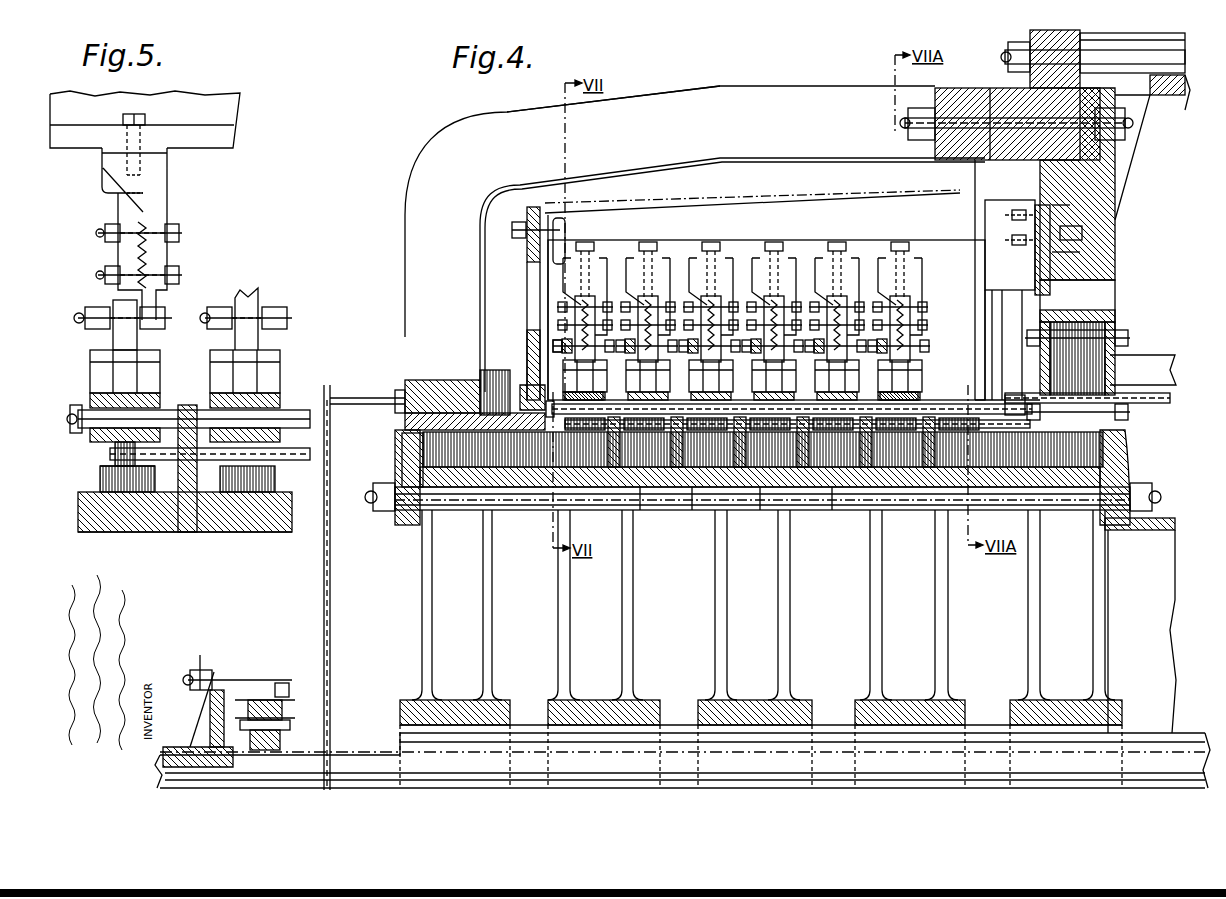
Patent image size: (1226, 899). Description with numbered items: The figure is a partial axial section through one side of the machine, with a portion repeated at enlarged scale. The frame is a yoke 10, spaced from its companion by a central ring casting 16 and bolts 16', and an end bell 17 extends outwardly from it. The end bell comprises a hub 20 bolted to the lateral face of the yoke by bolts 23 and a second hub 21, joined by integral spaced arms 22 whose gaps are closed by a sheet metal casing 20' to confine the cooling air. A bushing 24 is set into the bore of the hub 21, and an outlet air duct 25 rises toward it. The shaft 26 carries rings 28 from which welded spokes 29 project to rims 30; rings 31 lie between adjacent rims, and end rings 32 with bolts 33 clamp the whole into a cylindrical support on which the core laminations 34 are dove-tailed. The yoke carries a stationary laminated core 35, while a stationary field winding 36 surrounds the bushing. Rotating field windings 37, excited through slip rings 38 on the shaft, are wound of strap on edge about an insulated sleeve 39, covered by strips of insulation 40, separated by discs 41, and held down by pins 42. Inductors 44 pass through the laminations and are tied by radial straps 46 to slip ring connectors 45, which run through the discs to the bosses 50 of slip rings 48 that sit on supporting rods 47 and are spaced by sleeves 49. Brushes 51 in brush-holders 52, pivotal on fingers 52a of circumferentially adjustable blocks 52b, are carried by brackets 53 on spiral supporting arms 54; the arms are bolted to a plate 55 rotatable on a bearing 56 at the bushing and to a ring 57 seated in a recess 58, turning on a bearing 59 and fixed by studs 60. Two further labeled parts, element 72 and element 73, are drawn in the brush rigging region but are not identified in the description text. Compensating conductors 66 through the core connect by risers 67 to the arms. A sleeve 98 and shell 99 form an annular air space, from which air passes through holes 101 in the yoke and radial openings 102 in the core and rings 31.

In FIG. 4, the yoke 10 is at (1095, 172).
In FIG. 4, the central ring casting 16 is at (1152, 147).
In FIG. 4, the bolts 16' is at (1076, 52).
In FIG. 4, the end bell 17 is at (672, 93).
In FIG. 4, the hub 20 is at (1017, 111).
In FIG. 4, the sheet metal casing 20' is at (732, 275).
In FIG. 4, the hub 21 is at (395, 380).
In FIG. 4, the arms 22 is at (727, 104).
In FIG. 4, the bolts 23 is at (950, 108).
In FIG. 4, the bushing 24 is at (405, 423).
In FIG. 4, the outlet air ducts 25 is at (345, 600).
In FIG. 4, the shaft 26 is at (345, 760).
In FIG. 4, the rings 28 is at (645, 715).
In FIG. 4, the spokes 29 is at (715, 608).
In FIG. 4, the rims 30 is at (400, 475).
In FIG. 4, the rings 31 is at (525, 475).
In FIG. 4, the end rings 32 is at (400, 520).
In FIG. 4, the bolts 33 is at (832, 508).
In FIG. 5, the core laminations 34 is at (130, 518).
In FIG. 4, the core laminations 34 is at (692, 505).
In FIG. 4, the laminated core 35 is at (1080, 358).
In FIG. 4, the stationary field winding 36 is at (487, 380).
In FIG. 5, the rotating field windings 37 is at (100, 480).
In FIG. 4, the rotating field windings 37 is at (850, 440).
In FIG. 4, the slip rings 38 is at (258, 700).
In FIG. 5, the insulated sleeve 39 is at (95, 503).
In FIG. 5, the strips of insulation 40 is at (110, 466).
In FIG. 4, the strips of insulation 40 is at (763, 449).
In FIG. 5, the discs 41 is at (186, 525).
In FIG. 4, the discs 41 is at (760, 505).
In FIG. 4, the pins 42 is at (895, 392).
In FIG. 4, the inductors 44 is at (1135, 403).
In FIG. 5, the slip ring connectors 45 is at (295, 452).
In FIG. 4, the slip ring connectors 45 is at (932, 420).
In FIG. 4, the radial straps 46 is at (1005, 403).
In FIG. 5, the supporting rods 47 is at (72, 425).
In FIG. 4, the supporting rods 47 is at (748, 420).
In FIG. 5, the slip rings 48 is at (200, 380).
In FIG. 4, the slip rings 48 is at (810, 395).
In FIG. 5, the sleeves 49 is at (292, 415).
In FIG. 4, the sleeves 49 is at (668, 405).
In FIG. 5, the bosses 50 is at (115, 455).
In FIG. 5, the brushes 51 is at (105, 395).
In FIG. 4, the brushes 51 is at (592, 392).
In FIG. 5, the brush-holders 52 is at (145, 375).
In FIG. 4, the brush-holders 52 is at (600, 385).
In FIG. 5, the fingers 52a is at (128, 318).
In FIG. 5, the blocks 52b is at (128, 253).
In FIG. 5, the brackets 53 is at (167, 212).
In FIG. 4, the brackets 53 is at (655, 310).
In FIG. 5, the supporting arms 54 is at (218, 138).
In FIG. 4, the supporting arms 54 is at (722, 204).
In FIG. 4, the plate 55 is at (527, 250).
In FIG. 4, the bearing 56 is at (530, 385).
In FIG. 4, the ring 57 is at (1040, 200).
In FIG. 4, the recess 58 is at (1070, 205).
In FIG. 4, the bearing 59 is at (1080, 252).
In FIG. 4, the studs 60 is at (1085, 235).
In FIG. 4, the conductors 66 is at (1150, 368).
In FIG. 4, the risers 67 is at (1000, 298).
In FIG. 4, the enclosure 72 is at (560, 340).
In FIG. 5, the bolt 73 is at (105, 312).
In FIG. 4, the bolt 73 is at (575, 348).
In FIG. 4, the sleeve 98 is at (1150, 520).
In FIG. 4, the shell 99 is at (1185, 37).
In FIG. 4, the holes 101 is at (1080, 292).
In FIG. 4, the openings 102 is at (640, 510).